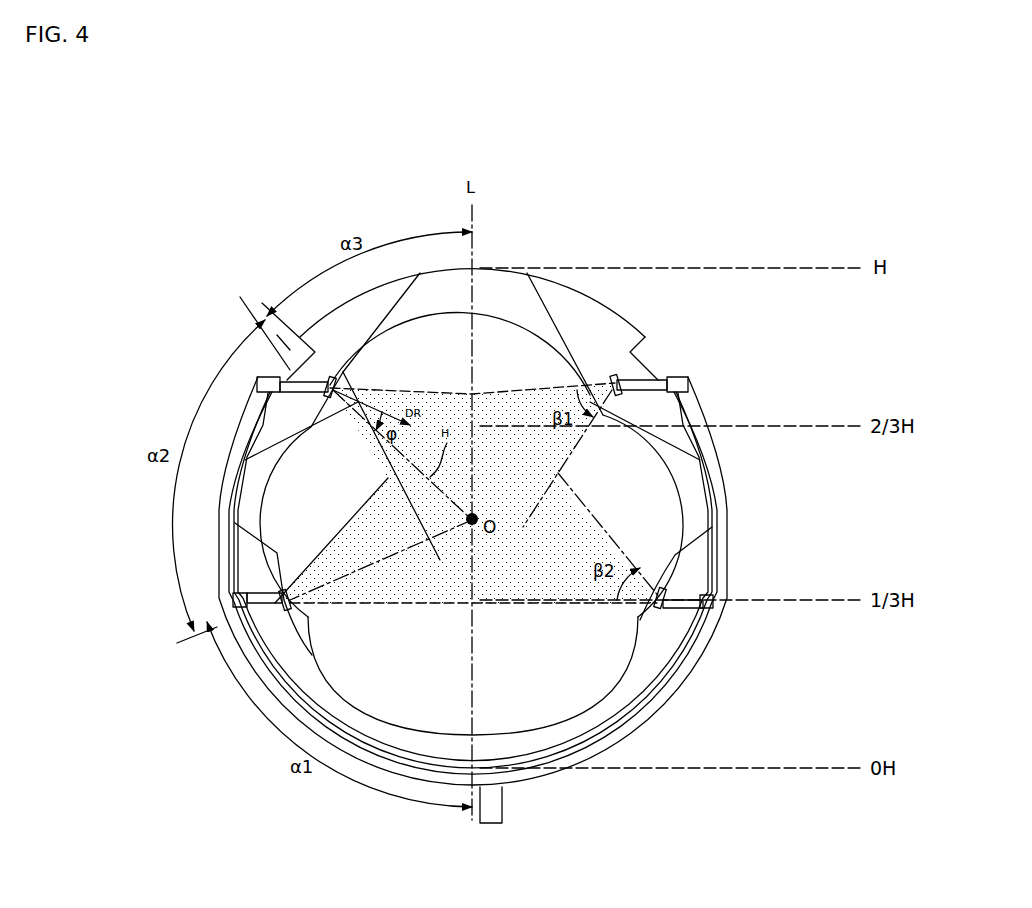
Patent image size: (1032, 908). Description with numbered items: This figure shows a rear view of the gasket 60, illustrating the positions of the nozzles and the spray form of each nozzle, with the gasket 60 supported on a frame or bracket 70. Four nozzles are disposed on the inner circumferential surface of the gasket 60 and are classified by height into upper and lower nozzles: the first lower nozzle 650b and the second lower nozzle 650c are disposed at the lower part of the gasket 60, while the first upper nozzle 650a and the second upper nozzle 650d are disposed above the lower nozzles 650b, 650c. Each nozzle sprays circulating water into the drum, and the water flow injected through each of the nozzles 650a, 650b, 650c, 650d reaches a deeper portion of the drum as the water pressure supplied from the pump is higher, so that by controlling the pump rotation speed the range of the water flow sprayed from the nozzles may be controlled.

The gasket 60 is at (336, 318).
The frame / bracket 70 is at (266, 687).
The first upper nozzle 650a is at (610, 380).
The first lower nozzle 650b is at (666, 590).
The second lower nozzle 650c is at (252, 318).
The second upper nozzle 650d is at (290, 612).